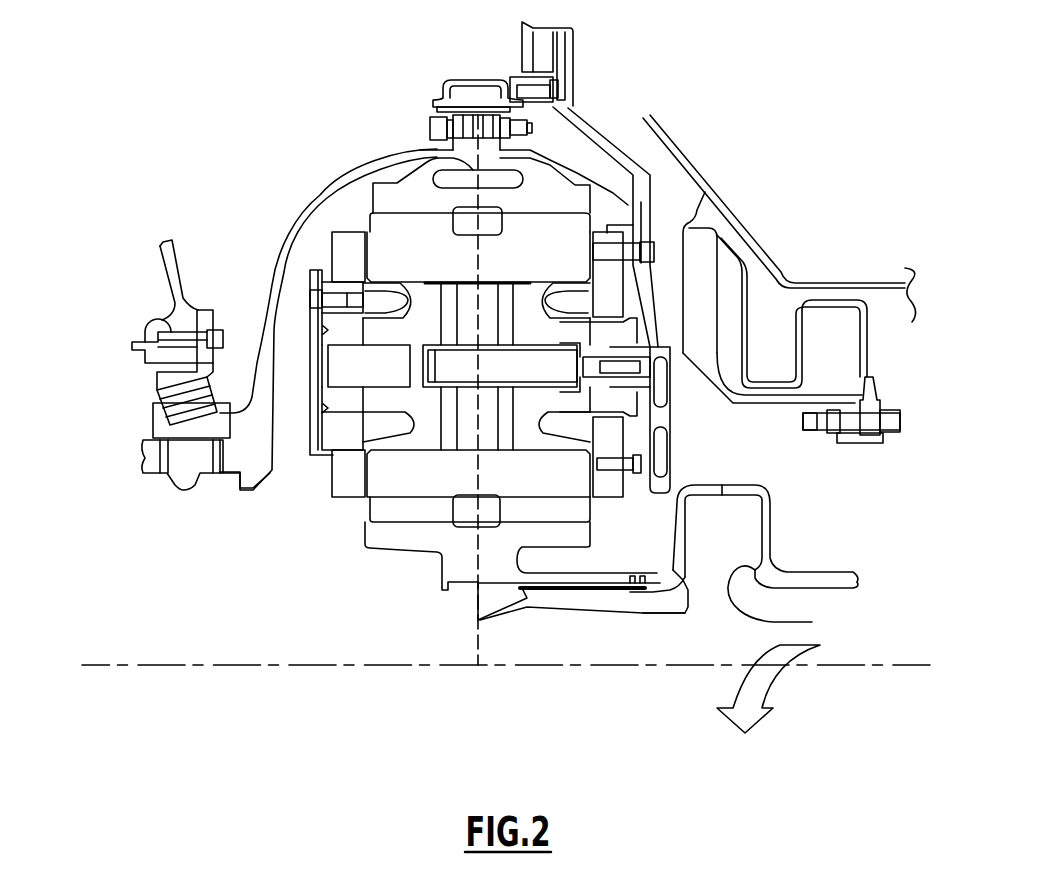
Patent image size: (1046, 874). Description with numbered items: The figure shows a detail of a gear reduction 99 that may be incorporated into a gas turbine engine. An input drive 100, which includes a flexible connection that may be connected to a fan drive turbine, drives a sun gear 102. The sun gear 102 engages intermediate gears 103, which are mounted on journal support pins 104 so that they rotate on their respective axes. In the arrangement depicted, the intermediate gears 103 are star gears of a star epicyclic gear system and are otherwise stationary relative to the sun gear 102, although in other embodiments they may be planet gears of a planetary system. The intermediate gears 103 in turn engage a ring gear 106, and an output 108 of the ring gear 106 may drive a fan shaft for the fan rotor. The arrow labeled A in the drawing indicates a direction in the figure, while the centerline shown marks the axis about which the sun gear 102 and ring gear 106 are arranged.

The gear reduction 99 is at (773, 147).
The input drive 100 is at (810, 622).
The sun gear 102 is at (400, 535).
The intermediate gears 103 is at (417, 250).
The journal support pins 104 is at (437, 415).
The ring gear 106 is at (535, 195).
The output 108 is at (200, 452).
The airflow direction A is at (845, 668).